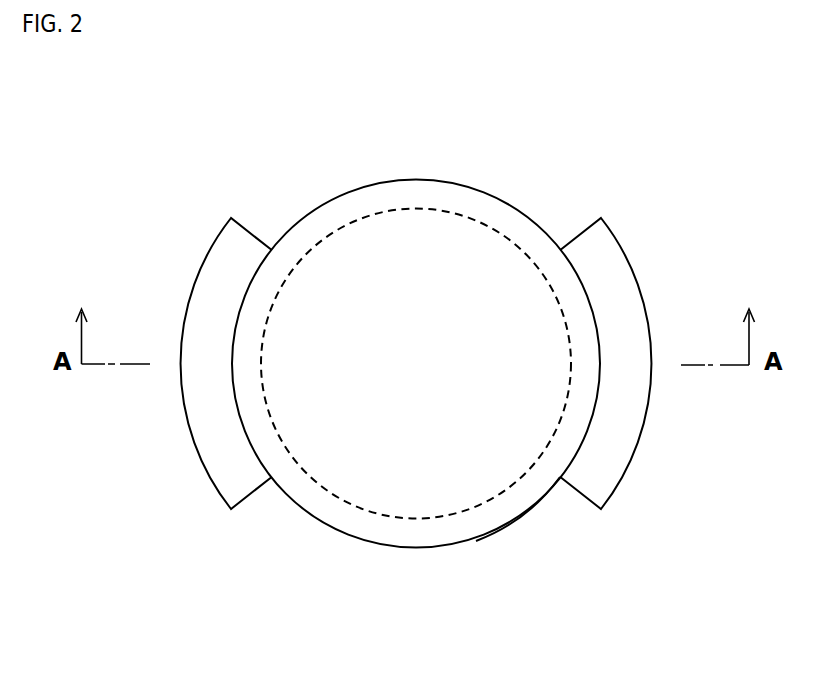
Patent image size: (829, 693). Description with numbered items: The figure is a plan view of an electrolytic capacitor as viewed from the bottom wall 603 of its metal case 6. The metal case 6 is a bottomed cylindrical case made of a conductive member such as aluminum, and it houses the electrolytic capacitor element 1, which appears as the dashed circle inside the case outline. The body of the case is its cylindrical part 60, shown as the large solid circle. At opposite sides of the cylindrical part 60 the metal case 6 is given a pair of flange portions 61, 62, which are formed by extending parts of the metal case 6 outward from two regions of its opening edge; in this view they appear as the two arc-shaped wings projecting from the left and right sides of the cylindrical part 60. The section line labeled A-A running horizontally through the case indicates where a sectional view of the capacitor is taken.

The electrolytic capacitor element 1 is at (420, 206).
The metal case 6 is at (418, 363).
The cylindrical part 60 is at (402, 550).
The flange portion 61 is at (223, 467).
The flange portion 62 is at (608, 468).
The bottom wall 603 is at (505, 510).